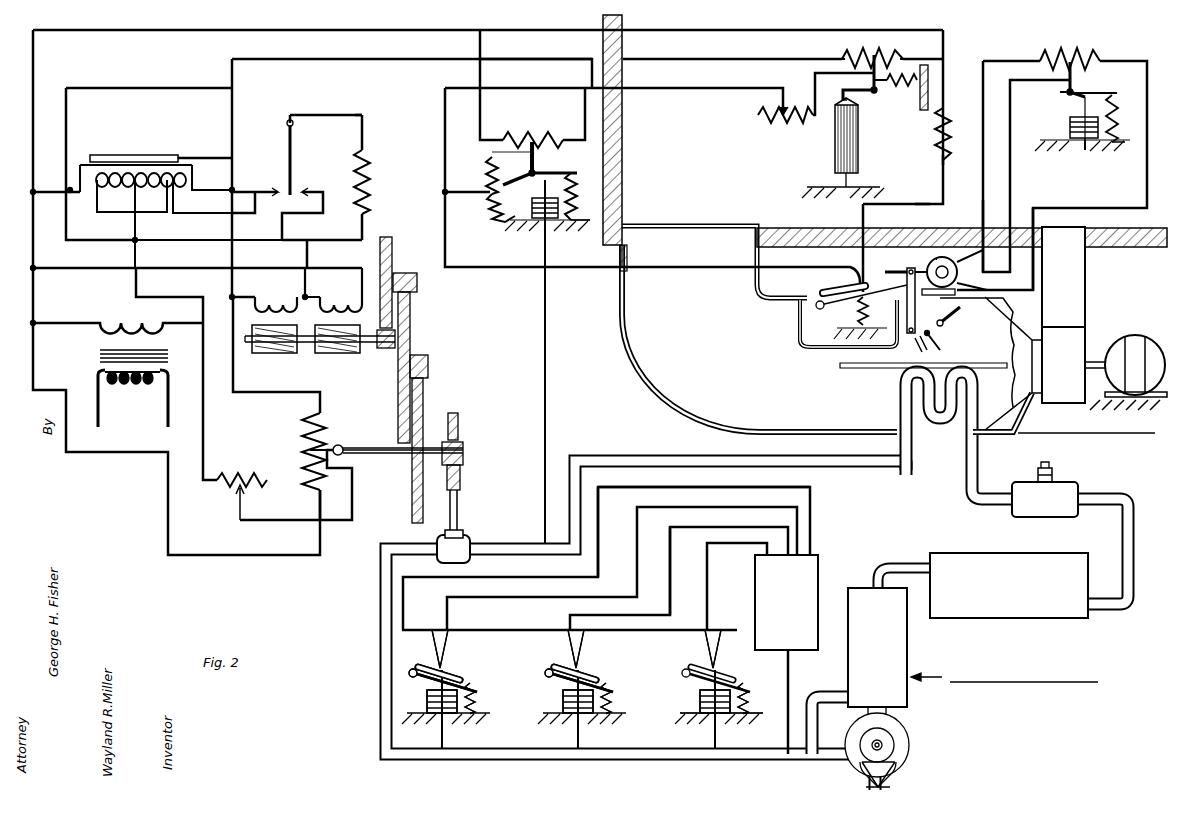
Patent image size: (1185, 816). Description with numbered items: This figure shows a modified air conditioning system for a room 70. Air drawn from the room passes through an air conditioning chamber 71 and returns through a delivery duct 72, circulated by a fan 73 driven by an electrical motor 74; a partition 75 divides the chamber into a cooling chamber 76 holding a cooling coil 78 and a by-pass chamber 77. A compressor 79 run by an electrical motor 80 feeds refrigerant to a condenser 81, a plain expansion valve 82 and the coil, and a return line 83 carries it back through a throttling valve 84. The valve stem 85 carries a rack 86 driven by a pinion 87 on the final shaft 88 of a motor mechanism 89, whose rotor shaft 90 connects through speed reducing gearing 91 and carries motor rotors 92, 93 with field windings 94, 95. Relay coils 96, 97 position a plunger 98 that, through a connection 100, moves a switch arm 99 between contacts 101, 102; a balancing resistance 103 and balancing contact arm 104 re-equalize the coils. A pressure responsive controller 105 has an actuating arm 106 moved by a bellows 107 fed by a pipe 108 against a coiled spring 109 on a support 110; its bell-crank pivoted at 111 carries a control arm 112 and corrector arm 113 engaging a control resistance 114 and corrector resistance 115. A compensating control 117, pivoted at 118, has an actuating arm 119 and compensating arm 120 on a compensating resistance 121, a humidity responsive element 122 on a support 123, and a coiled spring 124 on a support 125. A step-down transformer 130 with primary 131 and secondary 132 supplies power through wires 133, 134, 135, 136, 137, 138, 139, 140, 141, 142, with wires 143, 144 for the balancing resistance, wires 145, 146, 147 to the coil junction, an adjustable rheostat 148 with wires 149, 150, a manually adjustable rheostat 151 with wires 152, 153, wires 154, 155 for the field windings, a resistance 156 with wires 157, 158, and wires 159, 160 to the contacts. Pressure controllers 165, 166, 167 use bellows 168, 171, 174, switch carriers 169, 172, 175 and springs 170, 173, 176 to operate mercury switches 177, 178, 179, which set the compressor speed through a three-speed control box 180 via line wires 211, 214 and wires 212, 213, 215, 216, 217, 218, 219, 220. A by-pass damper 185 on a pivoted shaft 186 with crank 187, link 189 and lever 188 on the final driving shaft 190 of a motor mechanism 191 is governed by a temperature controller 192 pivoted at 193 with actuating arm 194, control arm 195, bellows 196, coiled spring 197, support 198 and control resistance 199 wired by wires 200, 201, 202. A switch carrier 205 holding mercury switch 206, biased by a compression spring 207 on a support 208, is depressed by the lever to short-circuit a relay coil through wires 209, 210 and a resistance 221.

The room 70 is at (885, 143).
The air conditioning chamber 71 is at (827, 329).
The delivery duct 72 is at (1068, 282).
The fan 73 is at (1075, 343).
The electrical motor 74 is at (1135, 345).
The partition 75 is at (858, 365).
The cooling chamber 76 is at (900, 378).
The by-pass chamber 77 is at (1047, 365).
The cooling coil 78 is at (917, 427).
The compressor 79 is at (897, 660).
The electrical motor 80 is at (908, 735).
The condenser 81 is at (1048, 555).
The plain expansion valve 82 is at (1050, 478).
The return line 83 is at (640, 455).
The throttling valve 84 is at (458, 548).
The valve stem 85 is at (457, 505).
The rack 86 is at (460, 420).
The pinion 87 is at (463, 455).
The final shaft 88 is at (385, 455).
The motor mechanism 89 is at (360, 534).
The rotor shaft 90 is at (305, 345).
The speed reducing and torque amplifying gearing 91 is at (427, 338).
The motor rotor 92 is at (272, 352).
The motor rotor 93 is at (340, 352).
The field winding 94 is at (281, 290).
The field winding 95 is at (333, 290).
The relay coil 96 is at (121, 192).
The relay coil 97 is at (160, 192).
The plunger 98 is at (125, 157).
The switch arm 99 is at (292, 132).
The non-conducting and non-magnetic connection 100 is at (210, 158).
The contact 101 is at (270, 185).
The contact 102 is at (303, 190).
The balancing resistance 103 is at (305, 428).
The balancing contact arm 104 is at (322, 448).
The pressure responsive controller 105 is at (481, 213).
The actuating arm 106 is at (570, 172).
The bellows 107 is at (540, 220).
The pipe 108 is at (545, 318).
The coiled spring 109 is at (580, 188).
The support 110 is at (585, 218).
The pivot 111 is at (535, 170).
The control arm 112 is at (512, 155).
The corrector arm 113 is at (520, 186).
The control resistance 114 is at (512, 134).
The corrector resistance 115 is at (471, 171).
The relative humidity responsive compensating control 117 is at (874, 133).
The pivot 118 is at (852, 100).
The actuating arm 119 is at (840, 104).
The compensating arm 120 is at (872, 84).
The compensating resistance 121 is at (858, 52).
The relative humidity responsive element 122 is at (840, 140).
The support 123 is at (835, 188).
The coiled spring 124 is at (912, 84).
The support 125 is at (924, 134).
The step-down transformer 130 is at (88, 357).
The high voltage primary 131 is at (133, 386).
The low voltage secondary 132 is at (131, 323).
The wire 133 is at (33, 292).
The wire 134 is at (33, 243).
The wire 135 is at (100, 30).
The wire 136 is at (480, 45).
The wire 137 is at (550, 35).
The wire 138 is at (710, 59).
The wire 139 is at (585, 125).
The wire 140 is at (232, 59).
The wire 141 is at (232, 228).
The wire 142 is at (232, 297).
The wire 143 is at (140, 448).
The wire 144 is at (243, 392).
The wire 145 is at (445, 130).
The wire 146 is at (176, 88).
The wire 147 is at (136, 230).
The adjustable rheostat 148 is at (779, 130).
The wire 149 is at (813, 75).
The wire 150 is at (702, 88).
The manually adjustable rheostat 151 is at (243, 470).
The wire 152 is at (292, 522).
The wire 153 is at (148, 298).
The wire 154 is at (202, 268).
The wire 155 is at (235, 268).
The resistance 156 is at (368, 180).
The wire 157 is at (366, 225).
The wire 158 is at (362, 118).
The wire 159 is at (148, 224).
The wire 160 is at (282, 224).
The pressure responsive controller 165 is at (504, 716).
The pressure responsive controller 166 is at (644, 716).
The pressure responsive controller 167 is at (777, 720).
The bellows 168 is at (435, 715).
The switch carrier 169 is at (437, 681).
The biasing spring 170 is at (485, 705).
The bellows 171 is at (563, 700).
The switch carrier 172 is at (605, 668).
The spring 173 is at (620, 690).
The bellows 174 is at (700, 700).
The switch carrier 175 is at (748, 688).
The spring 176 is at (748, 708).
The mercury switch 177 is at (455, 668).
The mercury switch 178 is at (552, 665).
The mercury switch 179 is at (745, 620).
The three-speed control box 180 is at (820, 565).
The by-pass damper 185 is at (958, 310).
The pivoted shaft 186 is at (940, 342).
The crank 187 is at (912, 342).
The crank or lever 188 is at (912, 270).
The connecting link 189 is at (923, 300).
The final driving shaft 190 is at (935, 258).
The motor mechanism 191 is at (948, 258).
The temperature responsive controller 192 is at (1077, 172).
The pivot 193 is at (1068, 93).
The actuating arm 194 is at (1117, 92).
The control arm 195 is at (1092, 79).
The bellows 196 is at (1070, 120).
The coiled spring 197 is at (1128, 116).
The support 198 is at (1070, 130).
The control resistance 199 is at (1085, 50).
The wire 200 is at (1000, 58).
The wire 201 is at (1080, 205).
The wire 202 is at (1010, 210).
The switch carrier 205 is at (890, 275).
The mercury switch 206 is at (825, 288).
The compression spring 207 is at (868, 315).
The support 208 is at (845, 325).
The wire 209 is at (622, 268).
The wire 210 is at (922, 204).
The line wire 211 is at (404, 625).
The wire 212 is at (432, 645).
The wire 213 is at (660, 487).
The line wire 214 is at (598, 548).
The wire 215 is at (508, 628).
The wire 216 is at (555, 645).
The wire 217 is at (705, 527).
The wire 218 is at (670, 592).
The wire 219 is at (700, 645).
The wire 220 is at (725, 548).
The resistance 221 is at (943, 160).